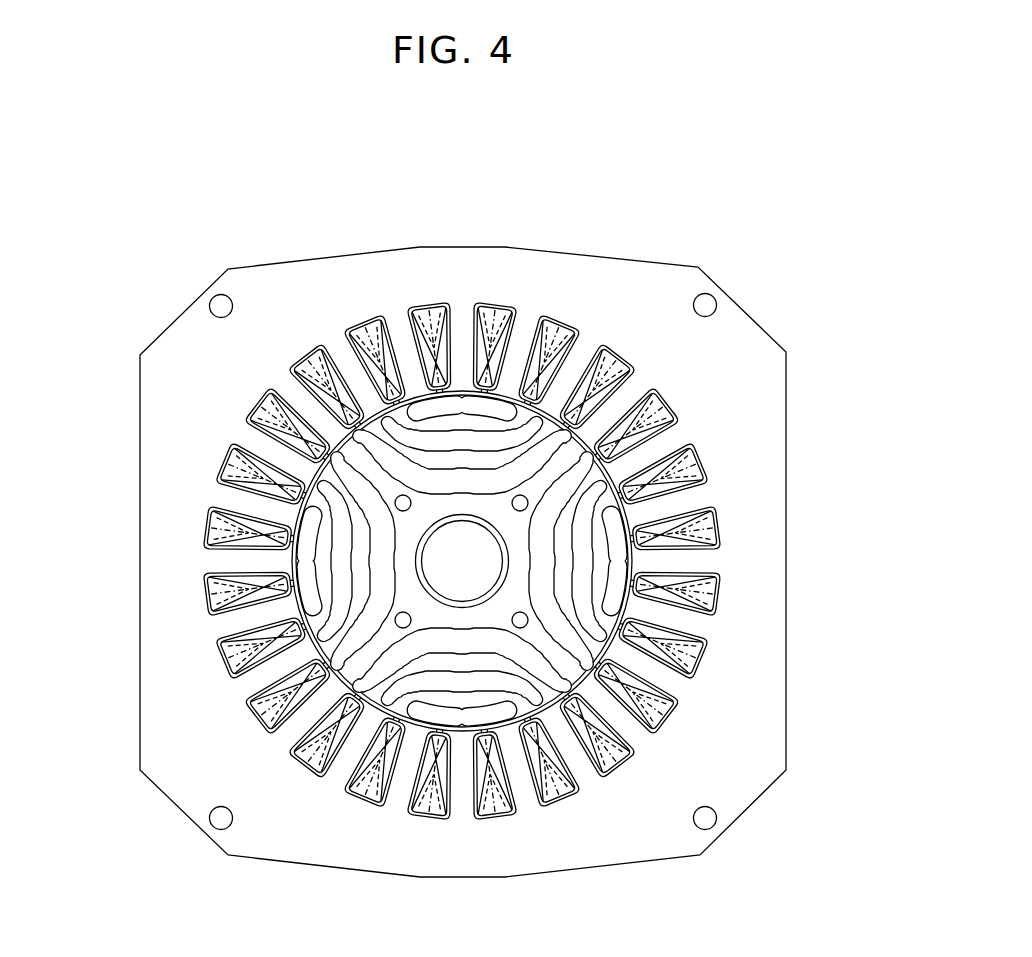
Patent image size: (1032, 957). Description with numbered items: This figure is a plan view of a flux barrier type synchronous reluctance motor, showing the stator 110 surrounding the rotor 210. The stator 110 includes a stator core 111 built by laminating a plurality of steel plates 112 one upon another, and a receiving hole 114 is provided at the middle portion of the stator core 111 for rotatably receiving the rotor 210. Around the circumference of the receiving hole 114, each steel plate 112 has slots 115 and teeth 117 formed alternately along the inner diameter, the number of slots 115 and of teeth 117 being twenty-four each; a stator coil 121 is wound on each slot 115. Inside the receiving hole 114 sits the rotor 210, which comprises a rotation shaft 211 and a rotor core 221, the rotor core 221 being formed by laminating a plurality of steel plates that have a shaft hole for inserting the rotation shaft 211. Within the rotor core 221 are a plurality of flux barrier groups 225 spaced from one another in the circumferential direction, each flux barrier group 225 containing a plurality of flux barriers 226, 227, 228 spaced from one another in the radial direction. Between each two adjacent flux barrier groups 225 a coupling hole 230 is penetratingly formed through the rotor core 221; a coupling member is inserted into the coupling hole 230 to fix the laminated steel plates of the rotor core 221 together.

The stator 110 is at (463, 496).
The stator core 111 is at (724, 336).
The steel plate 112 is at (461, 470).
The receiving hole 114 is at (590, 403).
The slot 115 is at (546, 318).
The tooth 117 is at (507, 362).
The stator coil 121 is at (658, 402).
The rotor 210 is at (478, 561).
The rotation shaft 211 is at (437, 562).
The rotor core 221 is at (360, 661).
The flux barrier group 225 is at (621, 561).
The flux barrier 226 is at (621, 538).
The flux barrier 227 is at (606, 497).
The flux barrier 228 is at (598, 469).
The coupling hole 230 is at (398, 496).